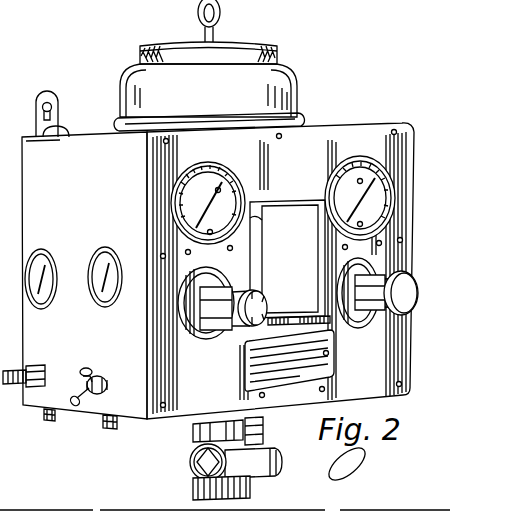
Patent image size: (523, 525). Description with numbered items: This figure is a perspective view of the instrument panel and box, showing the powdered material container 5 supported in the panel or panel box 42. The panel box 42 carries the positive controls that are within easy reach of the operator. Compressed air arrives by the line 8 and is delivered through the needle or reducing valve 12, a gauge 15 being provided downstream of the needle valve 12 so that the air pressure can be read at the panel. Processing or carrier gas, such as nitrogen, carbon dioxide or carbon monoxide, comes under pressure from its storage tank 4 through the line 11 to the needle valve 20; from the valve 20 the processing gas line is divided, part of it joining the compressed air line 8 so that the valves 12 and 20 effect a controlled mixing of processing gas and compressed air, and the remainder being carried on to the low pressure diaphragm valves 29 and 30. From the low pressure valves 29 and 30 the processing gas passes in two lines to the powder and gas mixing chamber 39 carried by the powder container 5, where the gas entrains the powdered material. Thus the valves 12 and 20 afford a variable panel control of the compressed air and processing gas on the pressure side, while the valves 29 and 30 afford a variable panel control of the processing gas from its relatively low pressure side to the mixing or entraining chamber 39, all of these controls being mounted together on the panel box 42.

The processing or carrier gas source 4 is at (436, 510).
The powdered material container 5 is at (294, 88).
The compressed air line 8 is at (50, 422).
The processing gas line 11 is at (108, 430).
The needle or reducing valve 12 is at (42, 370).
The gauge 15 is at (49, 262).
The needle valve 20 is at (99, 374).
The low pressure diaphragm valve 29 is at (226, 338).
The low pressure diaphragm valve 30 is at (418, 289).
The powder and gas mixing chamber 39 is at (194, 434).
The panel box 42 is at (414, 204).